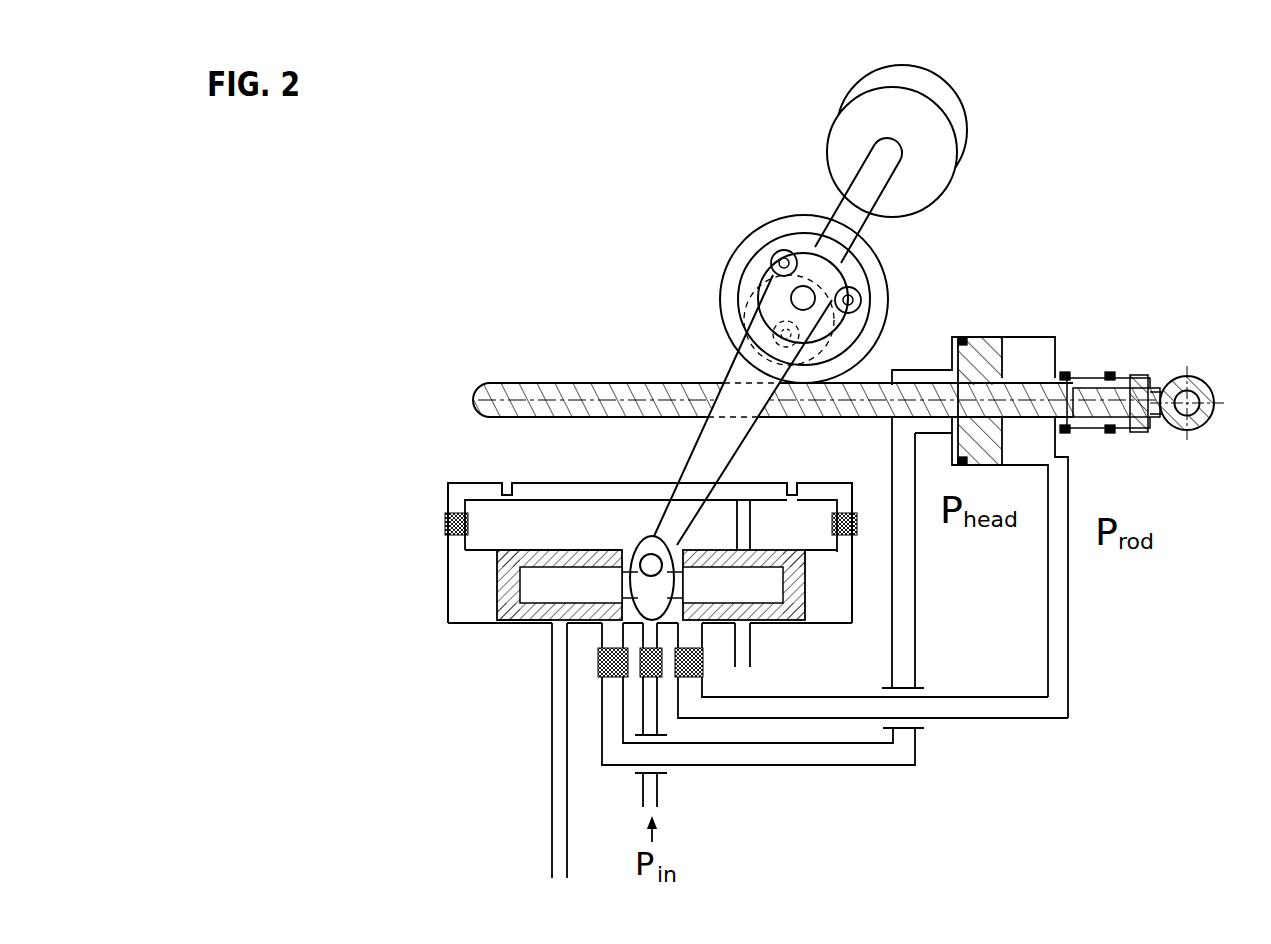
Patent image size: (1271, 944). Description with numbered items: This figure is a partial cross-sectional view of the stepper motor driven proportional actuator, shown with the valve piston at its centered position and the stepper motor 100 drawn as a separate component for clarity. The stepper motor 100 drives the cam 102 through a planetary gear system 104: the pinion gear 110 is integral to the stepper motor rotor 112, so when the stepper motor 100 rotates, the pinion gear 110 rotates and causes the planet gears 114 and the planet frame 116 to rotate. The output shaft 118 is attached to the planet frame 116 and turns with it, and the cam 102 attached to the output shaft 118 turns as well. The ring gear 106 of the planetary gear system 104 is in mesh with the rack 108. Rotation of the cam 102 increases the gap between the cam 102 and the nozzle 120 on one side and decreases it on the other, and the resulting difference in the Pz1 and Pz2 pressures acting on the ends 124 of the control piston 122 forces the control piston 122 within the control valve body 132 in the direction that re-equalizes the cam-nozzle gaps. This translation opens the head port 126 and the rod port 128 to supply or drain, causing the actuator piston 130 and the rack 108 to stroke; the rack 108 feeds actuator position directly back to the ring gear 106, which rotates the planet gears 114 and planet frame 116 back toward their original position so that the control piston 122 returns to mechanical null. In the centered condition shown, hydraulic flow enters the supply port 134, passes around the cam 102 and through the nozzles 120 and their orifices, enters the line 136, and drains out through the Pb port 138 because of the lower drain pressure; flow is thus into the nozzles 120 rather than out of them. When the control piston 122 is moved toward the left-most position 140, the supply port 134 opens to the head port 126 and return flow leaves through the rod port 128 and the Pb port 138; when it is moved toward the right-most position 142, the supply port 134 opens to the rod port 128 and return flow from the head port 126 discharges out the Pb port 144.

The stepper motor 100 is at (932, 93).
The cam 102 is at (587, 548).
The planetary gear system 104 is at (660, 234).
The ring gear 106 is at (822, 295).
The rack 108 is at (600, 382).
The pinion gear 110 is at (838, 268).
The stepper motor rotor 112 is at (853, 213).
The planet gears 114 is at (782, 250).
The planet frame 116 is at (862, 318).
The output shaft 118 is at (708, 472).
The nozzle 120 is at (600, 583).
The control piston 122 is at (465, 495).
The ends 124 is at (507, 553).
The head port 126 is at (552, 623).
The rod port 128 is at (692, 625).
The actuator piston 130 is at (985, 358).
The control valve body 132 is at (507, 547).
The supply port 134 is at (600, 677).
The line 136 is at (625, 492).
The Pb port 138 is at (741, 628).
The left-most position 140 is at (448, 597).
The right-most position 142 is at (855, 558).
The Pb port 144 is at (507, 620).